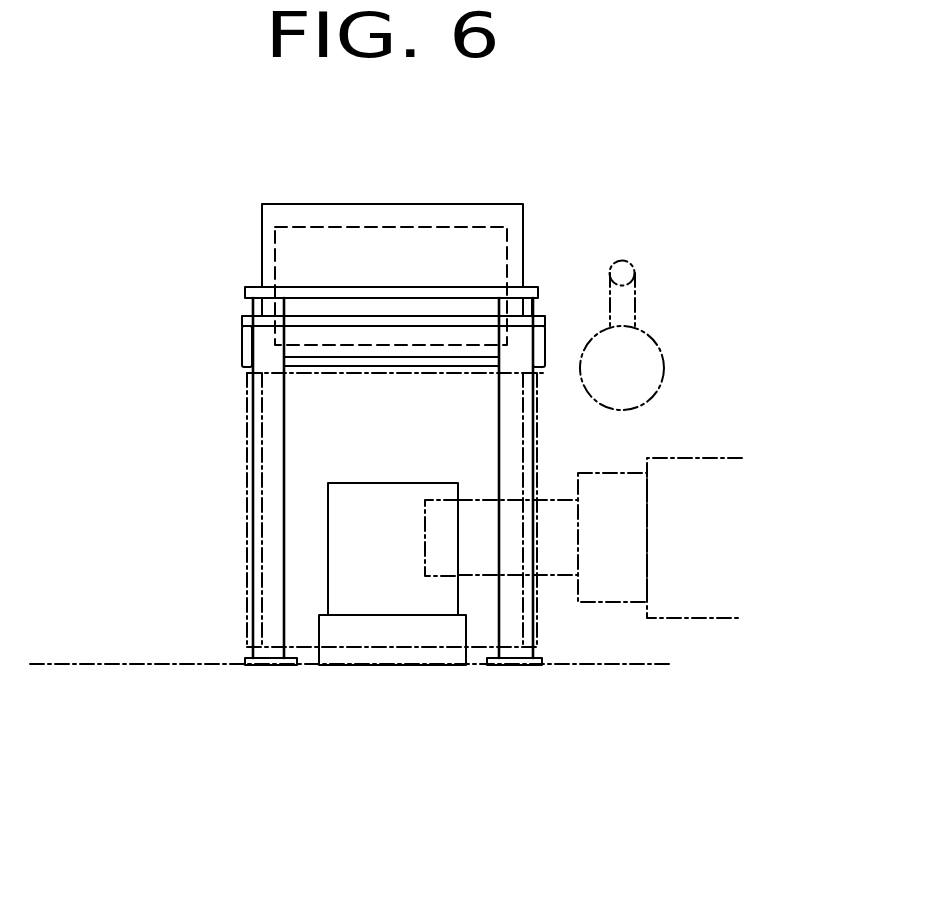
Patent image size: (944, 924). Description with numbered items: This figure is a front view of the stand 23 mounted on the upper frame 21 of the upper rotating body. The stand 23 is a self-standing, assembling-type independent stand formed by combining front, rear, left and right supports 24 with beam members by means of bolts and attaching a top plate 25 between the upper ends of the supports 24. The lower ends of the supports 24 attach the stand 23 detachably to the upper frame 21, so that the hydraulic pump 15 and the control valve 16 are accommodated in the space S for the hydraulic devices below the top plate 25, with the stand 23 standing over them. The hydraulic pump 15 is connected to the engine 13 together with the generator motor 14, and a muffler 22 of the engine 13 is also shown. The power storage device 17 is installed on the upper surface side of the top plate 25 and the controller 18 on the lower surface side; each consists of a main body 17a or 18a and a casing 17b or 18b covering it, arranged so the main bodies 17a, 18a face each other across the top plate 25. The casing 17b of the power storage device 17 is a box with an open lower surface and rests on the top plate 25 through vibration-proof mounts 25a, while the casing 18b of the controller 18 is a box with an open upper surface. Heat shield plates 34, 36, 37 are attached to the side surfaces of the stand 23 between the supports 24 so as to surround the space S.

The engine 13 is at (673, 618).
The generator motor 14 is at (610, 602).
The hydraulic pump 15 is at (478, 578).
The control valve 16 is at (328, 548).
The power storage device 17 is at (298, 271).
The main body 17a is at (260, 240).
The casing 17b is at (262, 270).
The controller 18 is at (391, 418).
The main body 18a is at (348, 358).
The casing 18b is at (323, 427).
The upper frame 21 is at (137, 662).
The muffler 22 is at (660, 347).
The stand 23 is at (349, 448).
The support 24 is at (247, 627).
The top plate 25 is at (530, 287).
The vibration-proof mount 25a is at (247, 305).
The heat shield plate 34 is at (360, 648).
The heat shield plate 36 is at (394, 510).
The heat shield plate 37 is at (245, 460).
The space S is at (300, 605).